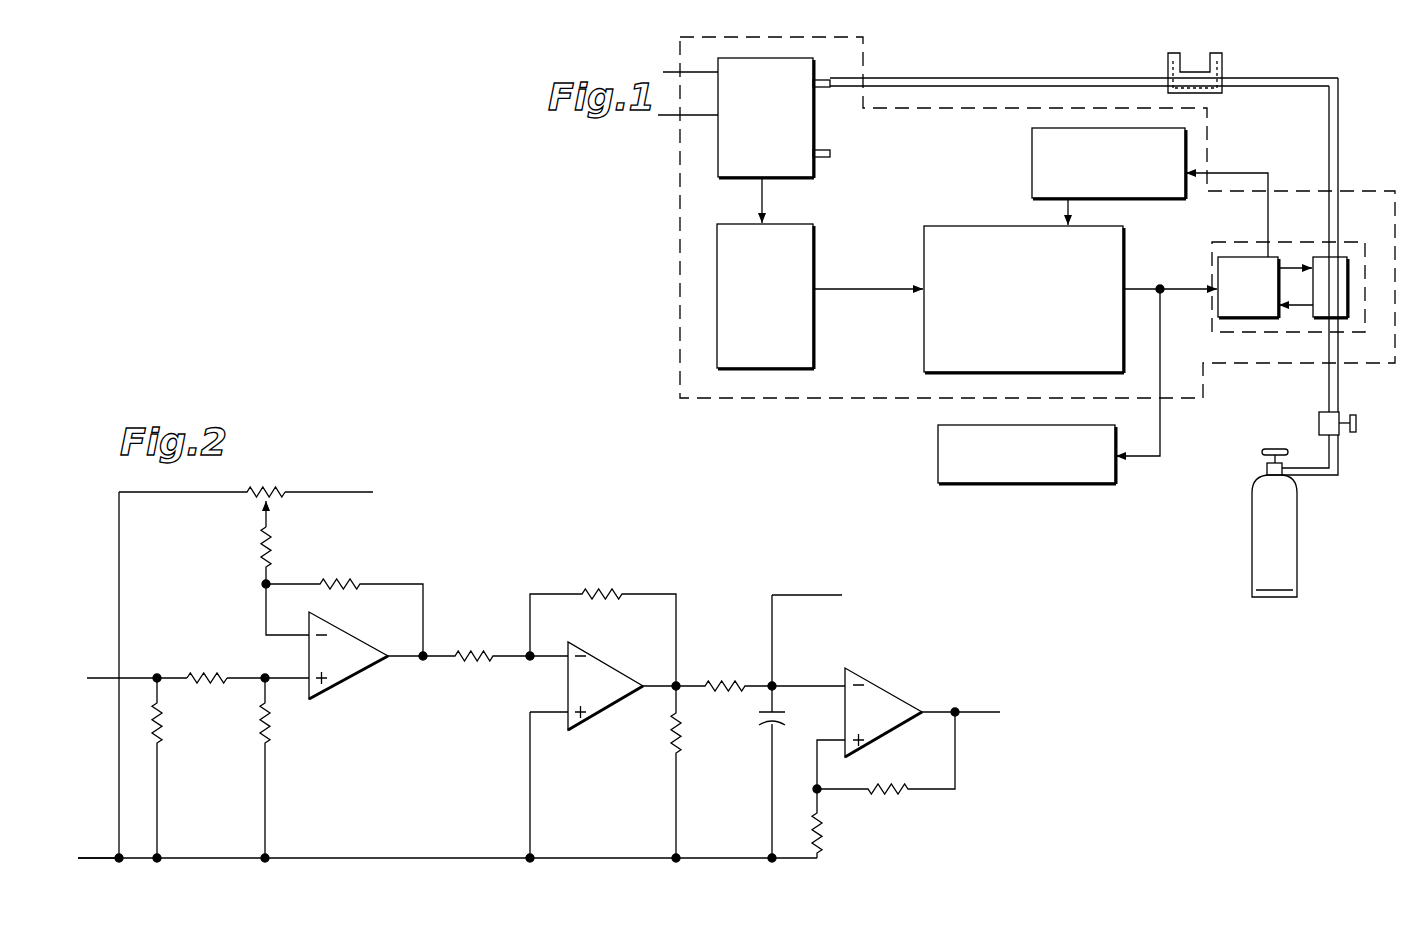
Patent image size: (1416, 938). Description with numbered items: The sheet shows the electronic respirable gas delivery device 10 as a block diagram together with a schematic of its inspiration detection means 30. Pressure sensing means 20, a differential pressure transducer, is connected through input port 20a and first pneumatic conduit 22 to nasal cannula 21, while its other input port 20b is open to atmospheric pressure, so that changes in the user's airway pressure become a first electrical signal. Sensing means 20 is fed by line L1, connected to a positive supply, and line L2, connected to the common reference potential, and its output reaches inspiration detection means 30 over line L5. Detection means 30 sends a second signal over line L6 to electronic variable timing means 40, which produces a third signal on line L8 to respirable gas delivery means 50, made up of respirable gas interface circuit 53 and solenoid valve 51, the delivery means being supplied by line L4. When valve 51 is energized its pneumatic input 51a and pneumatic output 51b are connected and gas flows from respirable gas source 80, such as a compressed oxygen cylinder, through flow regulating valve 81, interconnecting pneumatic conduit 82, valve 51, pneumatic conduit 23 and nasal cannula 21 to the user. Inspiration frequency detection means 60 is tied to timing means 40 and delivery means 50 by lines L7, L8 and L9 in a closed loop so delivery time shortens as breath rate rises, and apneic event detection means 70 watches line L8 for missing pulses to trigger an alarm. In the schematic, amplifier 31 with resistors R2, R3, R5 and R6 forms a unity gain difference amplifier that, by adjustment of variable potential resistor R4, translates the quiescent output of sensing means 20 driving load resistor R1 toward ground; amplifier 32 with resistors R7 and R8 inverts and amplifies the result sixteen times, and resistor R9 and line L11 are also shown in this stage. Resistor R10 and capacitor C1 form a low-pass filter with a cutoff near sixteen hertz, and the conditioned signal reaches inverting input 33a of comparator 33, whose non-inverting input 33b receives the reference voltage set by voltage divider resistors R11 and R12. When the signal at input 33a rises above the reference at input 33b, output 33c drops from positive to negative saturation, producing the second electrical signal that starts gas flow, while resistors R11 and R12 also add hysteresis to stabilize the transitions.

In FIG. 1, the respirable gas delivery device 10 is at (672, 131).
In FIG. 1, the pressure sensing means 20 is at (770, 57).
In FIG. 1, the input port 20a is at (835, 69).
In FIG. 1, the input port 20b is at (834, 140).
In FIG. 1, the nasal cannula 21 is at (1222, 62).
In FIG. 1, the first pneumatic conduit 22 is at (1015, 78).
In FIG. 1, the pneumatic conduit 23 is at (1338, 152).
In FIG. 1, the inspiration detection means 30 is at (717, 331).
In FIG. 1, the electronic variable timing means 40 is at (924, 353).
In FIG. 1, the respirable gas delivery means 50 is at (1265, 332).
In FIG. 1, the solenoid valve 51 is at (1347, 278).
In FIG. 1, the pneumatic input 51a is at (1338, 320).
In FIG. 1, the pneumatic output 51b is at (1335, 257).
In FIG. 1, the respirable gas interface circuit 53 is at (1240, 257).
In FIG. 1, the inspiration frequency detection means 60 is at (1185, 148).
In FIG. 1, the apneic event detection means 70 is at (1015, 483).
In FIG. 1, the respirable gas source 80 is at (1297, 527).
In FIG. 1, the flow regulating valve 81 is at (1319, 423).
In FIG. 1, the interconnecting pneumatic conduit 82 is at (1338, 381).
In FIG. 2, the operational amplifier 31 is at (352, 680).
In FIG. 2, the operational amplifier 32 is at (605, 710).
In FIG. 2, the comparator 33 is at (885, 690).
In FIG. 2, the inverting input 33a is at (812, 672).
In FIG. 2, the non-inverting input 33b is at (824, 754).
In FIG. 2, the output 33c is at (933, 728).
In FIG. 2, the load resistor R1 is at (173, 770).
In FIG. 2, the resistor R2 is at (211, 666).
In FIG. 2, the resistor R3 is at (282, 770).
In FIG. 2, the variable potential resistor R4 is at (202, 479).
In FIG. 2, the resistor R5 is at (285, 568).
In FIG. 2, the resistor R6 is at (344, 604).
In FIG. 2, the resistor R7 is at (478, 643).
In FIG. 2, the resistor R8 is at (603, 625).
In FIG. 2, the resistor R9 is at (693, 774).
In FIG. 2, the resistor R10 is at (744, 674).
In FIG. 2, the voltage divider resistor R11 is at (839, 823).
In FIG. 2, the voltage divider resistor R12 is at (884, 753).
In FIG. 2, the capacitor C1 is at (779, 776).
In FIG. 1, the line L1 is at (690, 59).
In FIG. 2, the line L1 is at (344, 492).
In FIG. 1, the line L2 is at (688, 102).
In FIG. 2, the line L2 is at (90, 873).
In FIG. 1, the line L4 is at (1295, 251).
In FIG. 1, the line L5 is at (777, 200).
In FIG. 2, the line L5 is at (179, 669).
In FIG. 1, the line L6 is at (868, 276).
In FIG. 2, the line L6 is at (977, 712).
In FIG. 1, the line L7 is at (1074, 211).
In FIG. 1, the line L8 is at (1170, 278).
In FIG. 1, the line L9 is at (1294, 262).
In FIG. 2, the line L11 is at (828, 648).